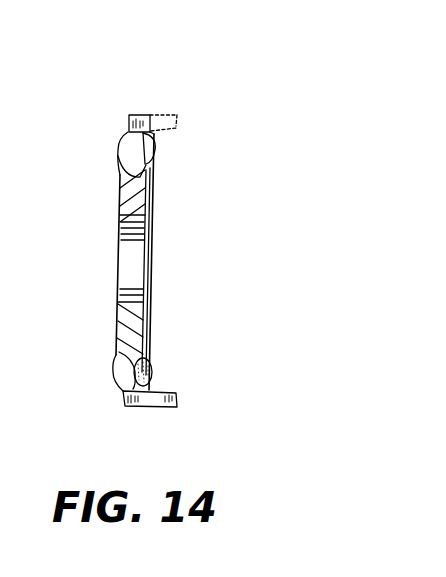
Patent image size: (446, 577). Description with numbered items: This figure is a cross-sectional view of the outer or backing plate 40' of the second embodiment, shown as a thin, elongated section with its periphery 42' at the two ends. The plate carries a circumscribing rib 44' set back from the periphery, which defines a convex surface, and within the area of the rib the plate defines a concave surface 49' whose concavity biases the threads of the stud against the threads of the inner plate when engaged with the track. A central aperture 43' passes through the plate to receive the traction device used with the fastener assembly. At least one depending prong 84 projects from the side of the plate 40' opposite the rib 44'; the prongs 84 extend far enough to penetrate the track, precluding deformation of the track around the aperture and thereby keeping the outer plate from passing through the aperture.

The backing plate 40' is at (204, 226).
The circumscribing rib 44' is at (104, 138).
The periphery 42' is at (154, 400).
The central aperture 43' is at (173, 258).
The concave surface 49' is at (187, 271).
The depending prong 84 is at (149, 115).